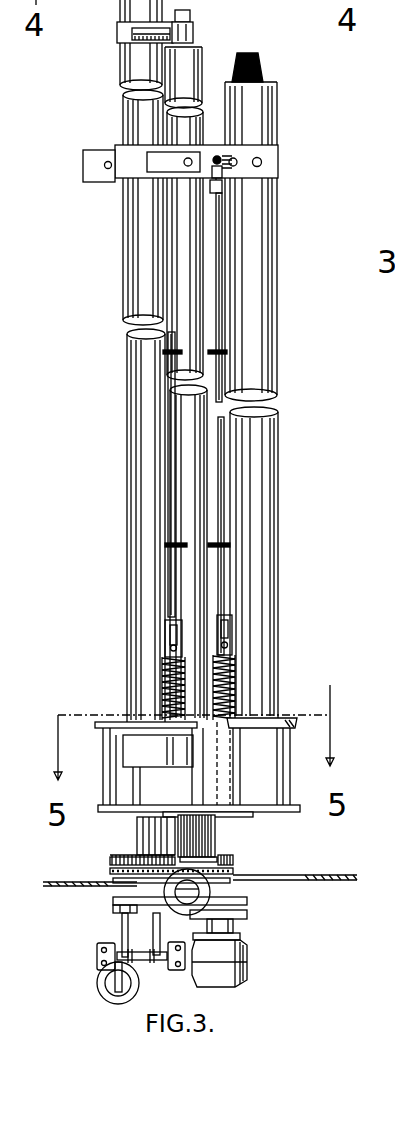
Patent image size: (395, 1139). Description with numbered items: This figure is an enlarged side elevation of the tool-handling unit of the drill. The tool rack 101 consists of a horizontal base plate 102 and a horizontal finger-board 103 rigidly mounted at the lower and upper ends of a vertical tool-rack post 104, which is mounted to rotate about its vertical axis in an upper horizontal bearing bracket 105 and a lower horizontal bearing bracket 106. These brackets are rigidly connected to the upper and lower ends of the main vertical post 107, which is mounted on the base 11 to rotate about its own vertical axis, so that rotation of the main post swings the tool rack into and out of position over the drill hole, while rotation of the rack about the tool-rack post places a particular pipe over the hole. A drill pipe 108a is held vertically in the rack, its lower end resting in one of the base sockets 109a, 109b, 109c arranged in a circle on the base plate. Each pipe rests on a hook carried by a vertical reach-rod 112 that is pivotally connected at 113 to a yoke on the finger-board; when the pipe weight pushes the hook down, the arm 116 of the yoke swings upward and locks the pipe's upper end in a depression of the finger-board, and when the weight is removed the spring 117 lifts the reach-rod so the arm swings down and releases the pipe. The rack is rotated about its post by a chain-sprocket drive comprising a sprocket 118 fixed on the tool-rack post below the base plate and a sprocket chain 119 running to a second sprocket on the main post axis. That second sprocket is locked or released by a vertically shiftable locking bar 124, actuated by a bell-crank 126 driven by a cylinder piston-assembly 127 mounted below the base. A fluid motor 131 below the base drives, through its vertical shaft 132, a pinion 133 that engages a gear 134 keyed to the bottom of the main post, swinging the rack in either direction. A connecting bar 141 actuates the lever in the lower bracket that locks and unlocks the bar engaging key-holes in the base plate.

The tool rack 101 is at (163, 352).
The horizontal base plate 102 is at (303, 805).
The horizontal finger-board 103 is at (280, 157).
The vertical tool-rack post 104 is at (200, 65).
The upper horizontal bearing bracket 105 is at (155, 34).
The lower horizontal bearing bracket 106 is at (163, 833).
The main vertical post 107 is at (140, 393).
The drill pipe 108a is at (257, 650).
The base socket 109a is at (260, 763).
The base socket 109b is at (147, 753).
The base socket 109c is at (113, 740).
The base 11 is at (318, 875).
The vertical reach-rod 112 is at (167, 462).
The pivotal connection 113 is at (217, 157).
The arm of yoke 116 is at (258, 160).
The spring 117 is at (163, 667).
The sprocket 118 is at (213, 878).
The sprocket chain 119 is at (233, 867).
The locking bar 124 is at (122, 927).
The bell-crank 126 is at (127, 982).
The cylinder piston-assembly 127 is at (100, 993).
The fluid motor 131 is at (247, 957).
The vertical shaft 132 is at (233, 932).
The pinion 133 is at (230, 847).
The gear 134 is at (110, 858).
The connecting bar 141 is at (160, 927).